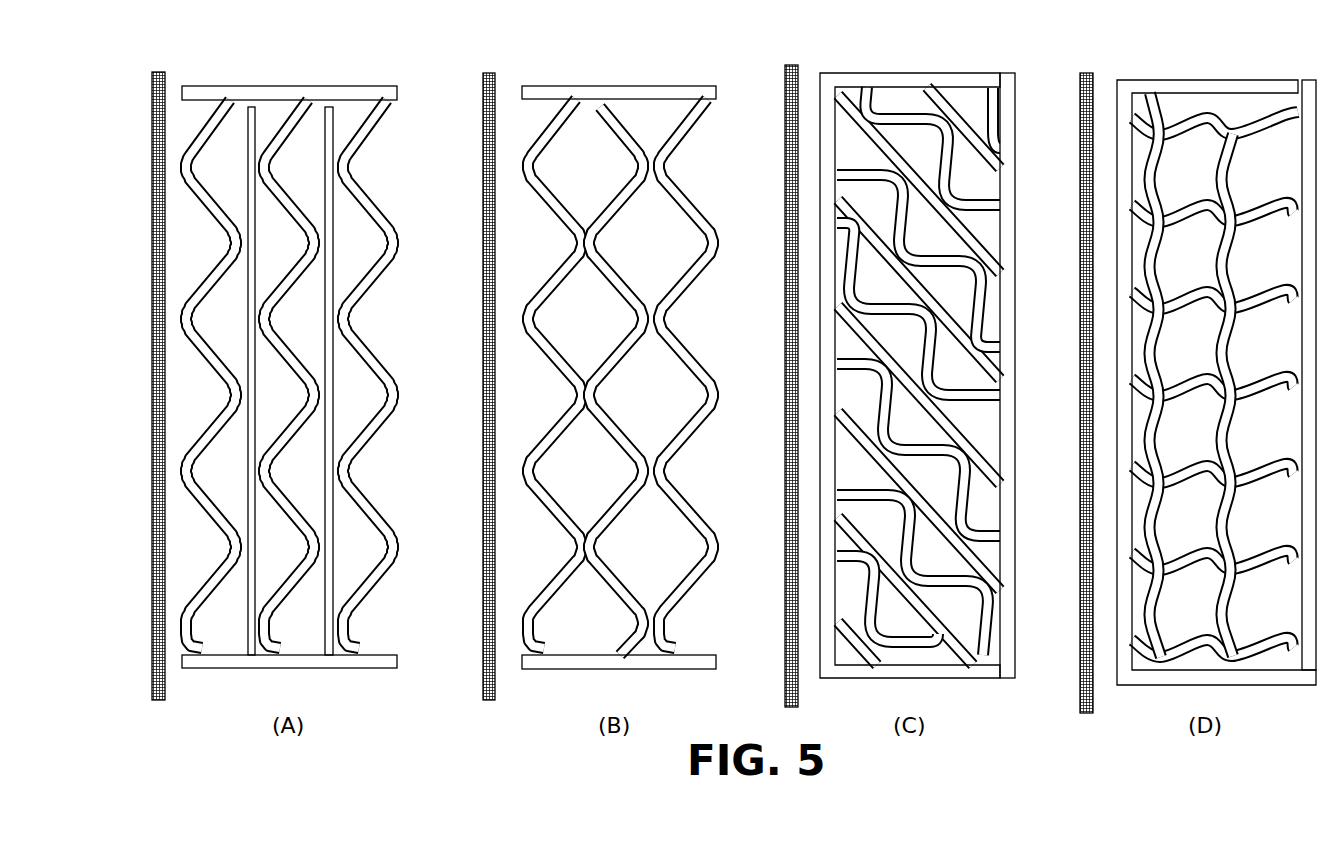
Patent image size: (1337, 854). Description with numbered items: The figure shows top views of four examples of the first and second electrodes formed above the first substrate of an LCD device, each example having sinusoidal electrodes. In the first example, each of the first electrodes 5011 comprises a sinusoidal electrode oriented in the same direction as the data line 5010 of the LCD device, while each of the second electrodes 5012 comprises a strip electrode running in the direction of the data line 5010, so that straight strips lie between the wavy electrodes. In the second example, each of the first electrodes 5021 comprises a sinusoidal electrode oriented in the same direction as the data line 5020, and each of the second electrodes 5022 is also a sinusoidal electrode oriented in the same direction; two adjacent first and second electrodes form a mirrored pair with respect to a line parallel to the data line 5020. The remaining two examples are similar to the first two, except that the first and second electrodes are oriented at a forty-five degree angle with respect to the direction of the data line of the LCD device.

The data line 5010 is at (152, 385).
The first electrode 5011 is at (216, 119).
The second electrode 5012 is at (333, 110).
The data line 5020 is at (483, 375).
The first electrode 5021 is at (570, 107).
The second electrode 5022 is at (600, 108).